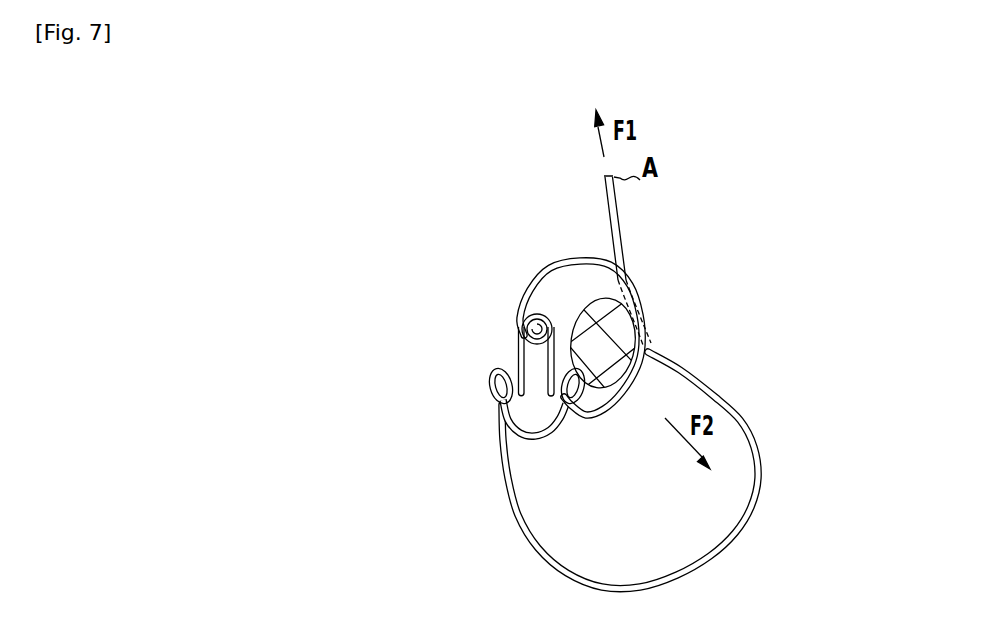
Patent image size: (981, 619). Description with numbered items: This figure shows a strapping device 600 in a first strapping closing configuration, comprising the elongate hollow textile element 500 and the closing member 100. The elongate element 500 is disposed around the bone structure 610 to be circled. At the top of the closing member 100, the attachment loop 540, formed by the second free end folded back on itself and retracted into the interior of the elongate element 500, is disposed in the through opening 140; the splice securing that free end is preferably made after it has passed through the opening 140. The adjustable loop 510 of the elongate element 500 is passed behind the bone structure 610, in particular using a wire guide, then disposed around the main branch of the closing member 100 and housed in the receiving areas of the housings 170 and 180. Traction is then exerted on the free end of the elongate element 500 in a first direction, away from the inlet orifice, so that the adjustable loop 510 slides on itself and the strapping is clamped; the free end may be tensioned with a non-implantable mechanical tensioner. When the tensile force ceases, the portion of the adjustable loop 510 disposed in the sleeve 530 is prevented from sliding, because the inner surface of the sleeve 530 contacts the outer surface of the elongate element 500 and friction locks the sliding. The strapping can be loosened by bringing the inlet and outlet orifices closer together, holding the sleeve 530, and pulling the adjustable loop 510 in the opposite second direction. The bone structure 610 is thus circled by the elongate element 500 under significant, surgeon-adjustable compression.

The closing member 100 is at (496, 373).
The through opening 140 is at (519, 328).
The housing 170 is at (498, 443).
The housing 180 is at (553, 408).
The elongate hollow textile element 500 is at (660, 471).
The adjustable loop 510 is at (703, 562).
The sleeve 530 is at (643, 303).
The attachment loop 540 is at (531, 283).
The strapping device 600 is at (538, 383).
The bone structure 610 is at (625, 356).